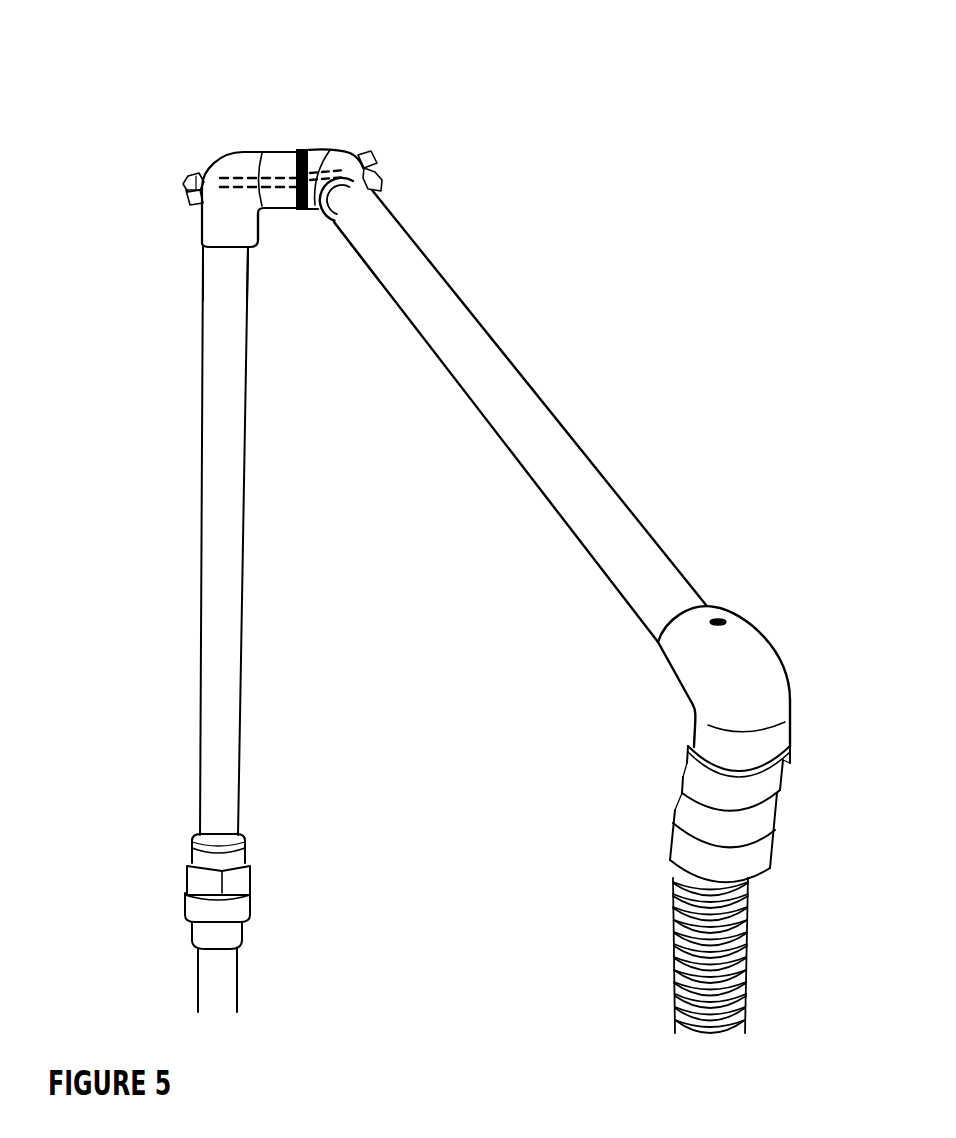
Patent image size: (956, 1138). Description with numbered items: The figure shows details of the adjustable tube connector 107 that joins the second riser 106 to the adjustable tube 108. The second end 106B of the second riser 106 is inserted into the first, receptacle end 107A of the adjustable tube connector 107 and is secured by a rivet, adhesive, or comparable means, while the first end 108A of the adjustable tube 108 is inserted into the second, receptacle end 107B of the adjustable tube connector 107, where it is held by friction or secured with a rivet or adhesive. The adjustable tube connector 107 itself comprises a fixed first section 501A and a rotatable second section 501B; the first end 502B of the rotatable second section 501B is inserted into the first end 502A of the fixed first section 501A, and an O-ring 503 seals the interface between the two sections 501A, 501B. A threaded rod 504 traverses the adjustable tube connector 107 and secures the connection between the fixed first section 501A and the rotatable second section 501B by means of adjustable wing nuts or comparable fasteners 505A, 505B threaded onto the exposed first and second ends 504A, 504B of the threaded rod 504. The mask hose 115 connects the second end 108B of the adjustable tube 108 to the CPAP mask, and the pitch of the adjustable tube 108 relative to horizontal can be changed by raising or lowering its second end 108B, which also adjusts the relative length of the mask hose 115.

The second riser 106 is at (203, 725).
The second end of the second riser 106B is at (227, 248).
The adjustable tube connector 107 is at (198, 90).
The first end of the adjustable tube connector 107A is at (260, 232).
The second end of the adjustable tube connector 107B is at (380, 195).
The adjustable tube 108 is at (575, 442).
The first end of the adjustable tube 108A is at (357, 177).
The second end of the adjustable tube 108B is at (700, 585).
The mask hose 115 is at (748, 958).
The first section 501A is at (232, 157).
The second section 501B is at (333, 150).
The first end of the first section 502A is at (294, 150).
The first end of the second section 502B is at (308, 150).
The O-ring 503 is at (295, 212).
The threaded rod 504 is at (230, 177).
The first end of the threaded rod 504A is at (180, 192).
The second end of the threaded rod 504B is at (380, 168).
The first bolt 505A is at (190, 203).
The second bolt 505B is at (367, 158).